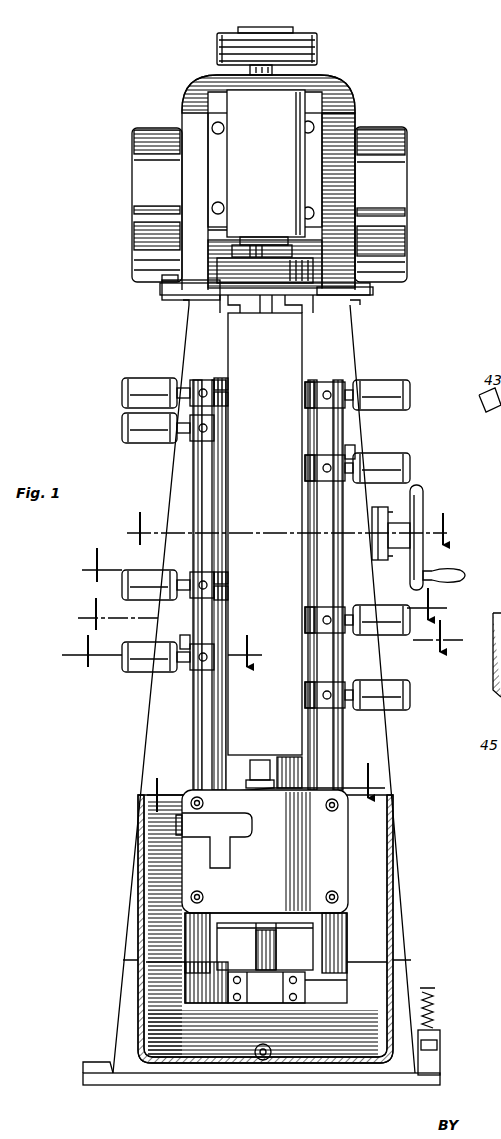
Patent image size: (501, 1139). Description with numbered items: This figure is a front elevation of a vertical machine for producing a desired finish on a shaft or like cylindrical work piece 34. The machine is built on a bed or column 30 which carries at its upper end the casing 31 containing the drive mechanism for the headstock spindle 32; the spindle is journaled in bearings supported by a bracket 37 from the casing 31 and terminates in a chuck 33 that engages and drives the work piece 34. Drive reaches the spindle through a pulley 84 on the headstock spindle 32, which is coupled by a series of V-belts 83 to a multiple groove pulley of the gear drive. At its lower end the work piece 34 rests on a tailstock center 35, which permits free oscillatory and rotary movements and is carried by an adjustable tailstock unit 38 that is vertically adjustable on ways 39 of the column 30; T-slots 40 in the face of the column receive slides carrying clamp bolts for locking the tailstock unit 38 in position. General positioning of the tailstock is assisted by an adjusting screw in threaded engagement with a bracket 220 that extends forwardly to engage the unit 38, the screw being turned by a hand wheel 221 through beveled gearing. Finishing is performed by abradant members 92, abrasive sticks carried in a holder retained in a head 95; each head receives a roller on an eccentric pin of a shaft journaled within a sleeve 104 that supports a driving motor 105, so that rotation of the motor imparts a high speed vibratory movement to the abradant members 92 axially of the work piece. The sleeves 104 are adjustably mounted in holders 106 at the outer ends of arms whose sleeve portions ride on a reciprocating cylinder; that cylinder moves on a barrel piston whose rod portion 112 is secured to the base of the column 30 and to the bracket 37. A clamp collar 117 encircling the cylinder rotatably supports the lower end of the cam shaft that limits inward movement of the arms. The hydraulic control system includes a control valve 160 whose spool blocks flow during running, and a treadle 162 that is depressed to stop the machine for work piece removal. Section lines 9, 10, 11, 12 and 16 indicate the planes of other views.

The pulley 84 is at (283, 30).
The V-belts 83 is at (299, 58).
The casing 31 is at (341, 135).
The bracket 37 is at (240, 182).
The headstock spindle 32 is at (235, 250).
The chuck 33 is at (235, 277).
The work piece 34 is at (243, 351).
The column 30 is at (343, 352).
The ways 39 is at (192, 700).
The T-slots 40 is at (198, 725).
The driving motor 105 is at (130, 427).
The holders 106 is at (204, 389).
The abradant members 92 is at (226, 386).
The head 95 is at (225, 400).
The sleeve 104 is at (183, 640).
The hand wheel 221 is at (424, 508).
The section line 11 is at (289, 528).
The section line 9 is at (263, 584).
The section line 12 is at (271, 625).
The section line 16 is at (167, 651).
The section line 10 is at (266, 784).
The tailstock center 35 is at (263, 762).
The clamp collar 117 is at (279, 757).
The tailstock unit 38 is at (335, 845).
The bracket 220 is at (300, 925).
The rod portion 112 is at (255, 962).
The treadle 162 is at (440, 1034).
The control valve 160 is at (441, 1056).